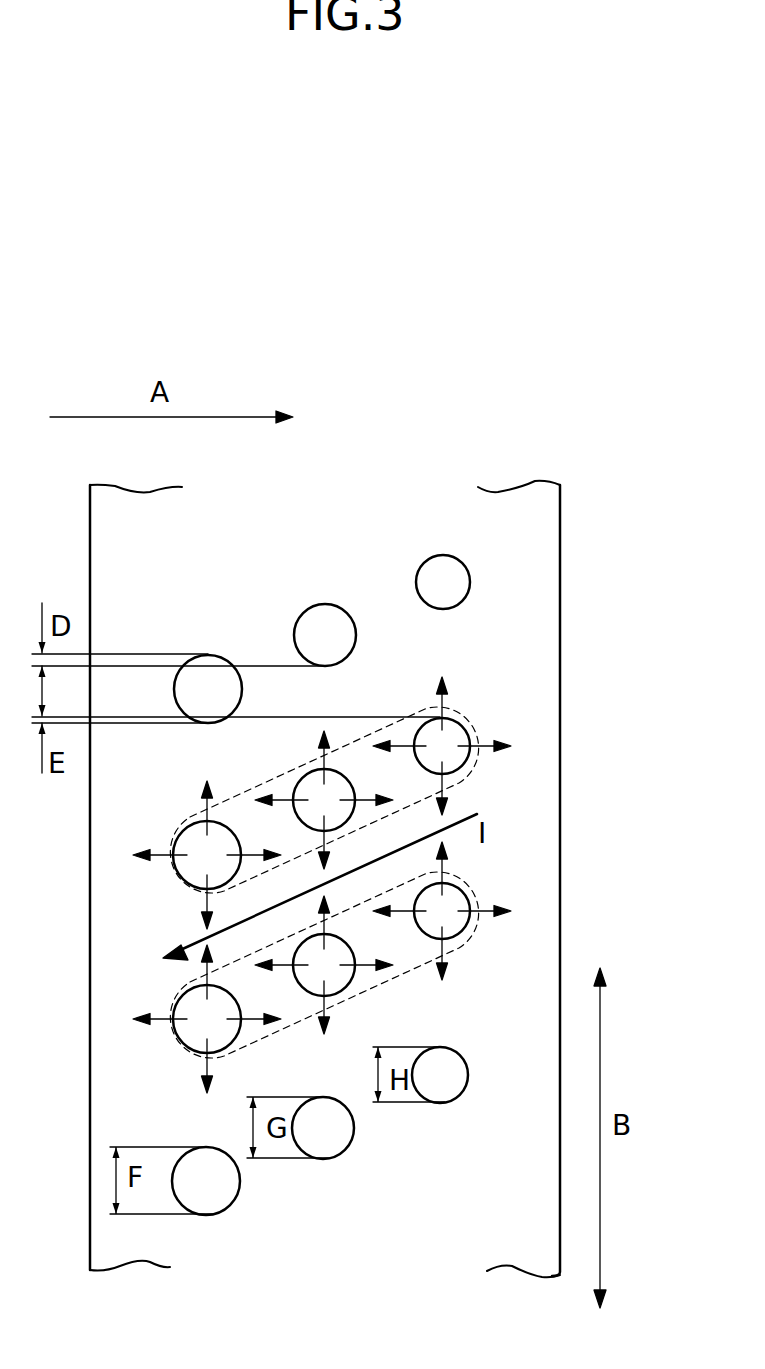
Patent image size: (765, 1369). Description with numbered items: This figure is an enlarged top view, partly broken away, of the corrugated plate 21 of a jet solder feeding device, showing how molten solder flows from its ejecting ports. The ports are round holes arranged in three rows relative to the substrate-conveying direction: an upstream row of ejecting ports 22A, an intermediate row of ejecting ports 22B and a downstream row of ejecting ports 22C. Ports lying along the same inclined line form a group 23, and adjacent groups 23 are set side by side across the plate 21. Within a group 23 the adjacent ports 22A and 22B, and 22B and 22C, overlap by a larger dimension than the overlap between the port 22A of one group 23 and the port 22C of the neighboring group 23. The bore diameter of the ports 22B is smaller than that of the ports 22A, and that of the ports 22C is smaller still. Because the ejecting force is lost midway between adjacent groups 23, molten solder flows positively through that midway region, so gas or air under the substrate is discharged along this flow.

The corrugated plate 21 is at (532, 527).
The ejecting port in the upstream row 22A is at (207, 1180).
The ejecting port in the intermediate row 22B is at (317, 1127).
The ejecting port in the downstream row 22C is at (440, 1073).
The group of ejecting ports 23 is at (483, 733).